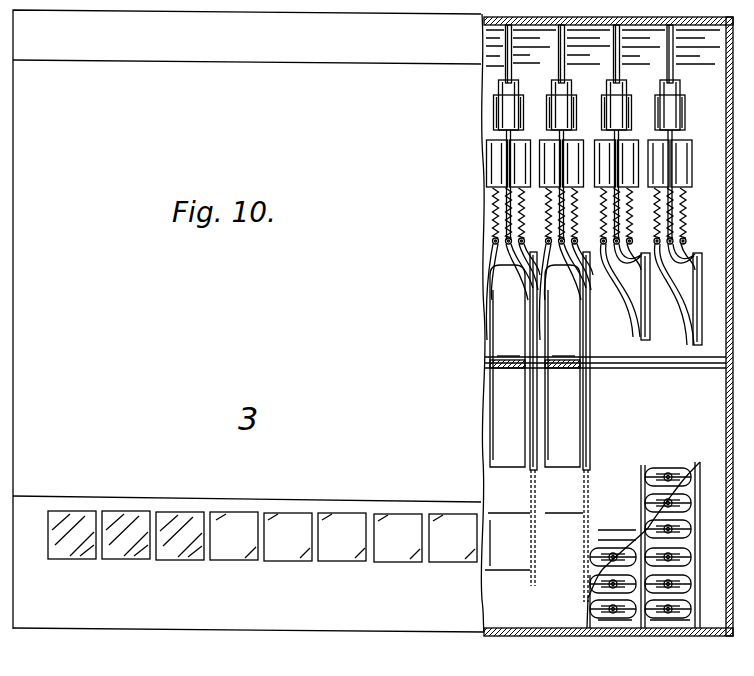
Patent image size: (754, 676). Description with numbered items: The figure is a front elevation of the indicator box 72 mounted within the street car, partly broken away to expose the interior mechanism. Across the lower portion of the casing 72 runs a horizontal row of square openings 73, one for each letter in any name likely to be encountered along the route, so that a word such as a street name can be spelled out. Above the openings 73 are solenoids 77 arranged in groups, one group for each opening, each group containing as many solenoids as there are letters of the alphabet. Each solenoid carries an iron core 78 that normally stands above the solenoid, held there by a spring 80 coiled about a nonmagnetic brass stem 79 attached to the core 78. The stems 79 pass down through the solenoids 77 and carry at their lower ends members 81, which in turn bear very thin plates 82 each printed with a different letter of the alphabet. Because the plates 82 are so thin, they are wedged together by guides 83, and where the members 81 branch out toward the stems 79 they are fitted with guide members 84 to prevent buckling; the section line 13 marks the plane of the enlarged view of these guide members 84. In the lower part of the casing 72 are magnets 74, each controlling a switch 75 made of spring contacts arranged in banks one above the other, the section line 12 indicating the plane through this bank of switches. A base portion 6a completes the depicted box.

The casing or indicator box 72 is at (331, 625).
The square openings 73 is at (283, 562).
The iron core 78 is at (560, 54).
The solenoids 77 is at (548, 118).
The stems 79 is at (676, 203).
The springs 80 is at (494, 232).
The members 81 is at (568, 270).
The section line 13— 13 is at (600, 410).
The guide members 84 is at (589, 441).
The plates 82 is at (587, 498).
The guides 83 is at (538, 540).
The section line 12— 12 is at (712, 512).
The magnets 74 is at (663, 618).
The switch 75 is at (680, 612).
The frame base 6a is at (608, 346).